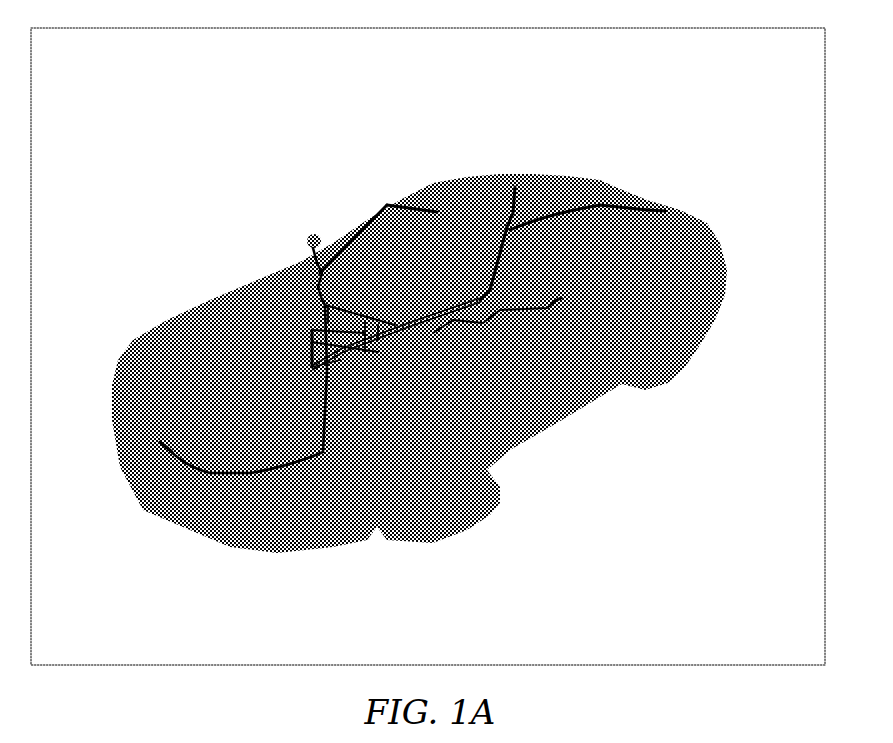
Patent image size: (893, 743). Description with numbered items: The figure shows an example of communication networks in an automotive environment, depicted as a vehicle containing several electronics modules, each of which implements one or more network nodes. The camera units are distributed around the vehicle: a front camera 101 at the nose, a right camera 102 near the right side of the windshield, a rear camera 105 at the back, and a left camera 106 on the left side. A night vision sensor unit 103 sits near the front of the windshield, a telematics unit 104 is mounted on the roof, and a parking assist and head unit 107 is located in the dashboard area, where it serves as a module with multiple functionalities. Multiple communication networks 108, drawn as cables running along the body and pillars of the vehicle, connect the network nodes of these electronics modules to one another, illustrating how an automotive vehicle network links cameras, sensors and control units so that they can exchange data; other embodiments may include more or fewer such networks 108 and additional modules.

The front camera 101 is at (143, 460).
The right camera 102 is at (310, 242).
The night vision sensor unit 103 is at (443, 212).
The telematics unit 104 is at (497, 177).
The rear camera 105 is at (673, 210).
The left camera 106 is at (557, 300).
The parking assist and head unit 107 is at (400, 317).
The communication networks 108 is at (355, 237).